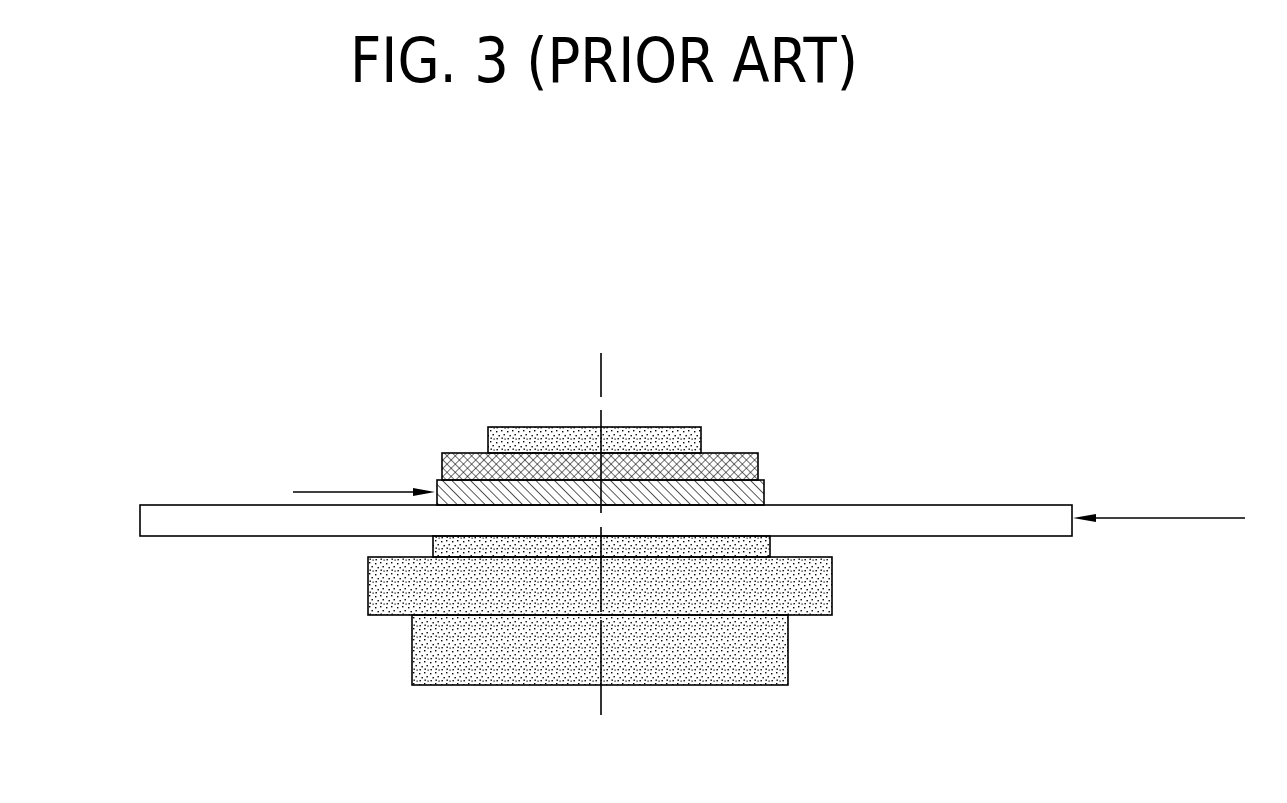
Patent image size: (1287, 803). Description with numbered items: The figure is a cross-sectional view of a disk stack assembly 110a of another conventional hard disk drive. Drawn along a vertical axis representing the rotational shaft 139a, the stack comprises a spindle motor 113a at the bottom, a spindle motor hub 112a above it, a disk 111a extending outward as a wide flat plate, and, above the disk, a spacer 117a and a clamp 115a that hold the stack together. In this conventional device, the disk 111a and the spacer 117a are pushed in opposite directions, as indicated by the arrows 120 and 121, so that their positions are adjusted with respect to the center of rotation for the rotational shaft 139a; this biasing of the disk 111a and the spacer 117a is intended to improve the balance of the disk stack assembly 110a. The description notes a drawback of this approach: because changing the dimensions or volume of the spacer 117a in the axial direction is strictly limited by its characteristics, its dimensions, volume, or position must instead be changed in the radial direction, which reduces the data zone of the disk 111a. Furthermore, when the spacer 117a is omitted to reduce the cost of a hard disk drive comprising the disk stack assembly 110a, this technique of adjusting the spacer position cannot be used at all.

The disk stack assembly 110a is at (92, 320).
The disk 111a is at (267, 518).
The spindle motor hub 112a is at (750, 537).
The spindle motor 113a is at (806, 667).
The clamp 115a is at (460, 453).
The spacer 117a is at (720, 453).
The arrow 120 is at (1175, 518).
The arrow 121 is at (367, 492).
The rotational shaft 139a is at (590, 348).